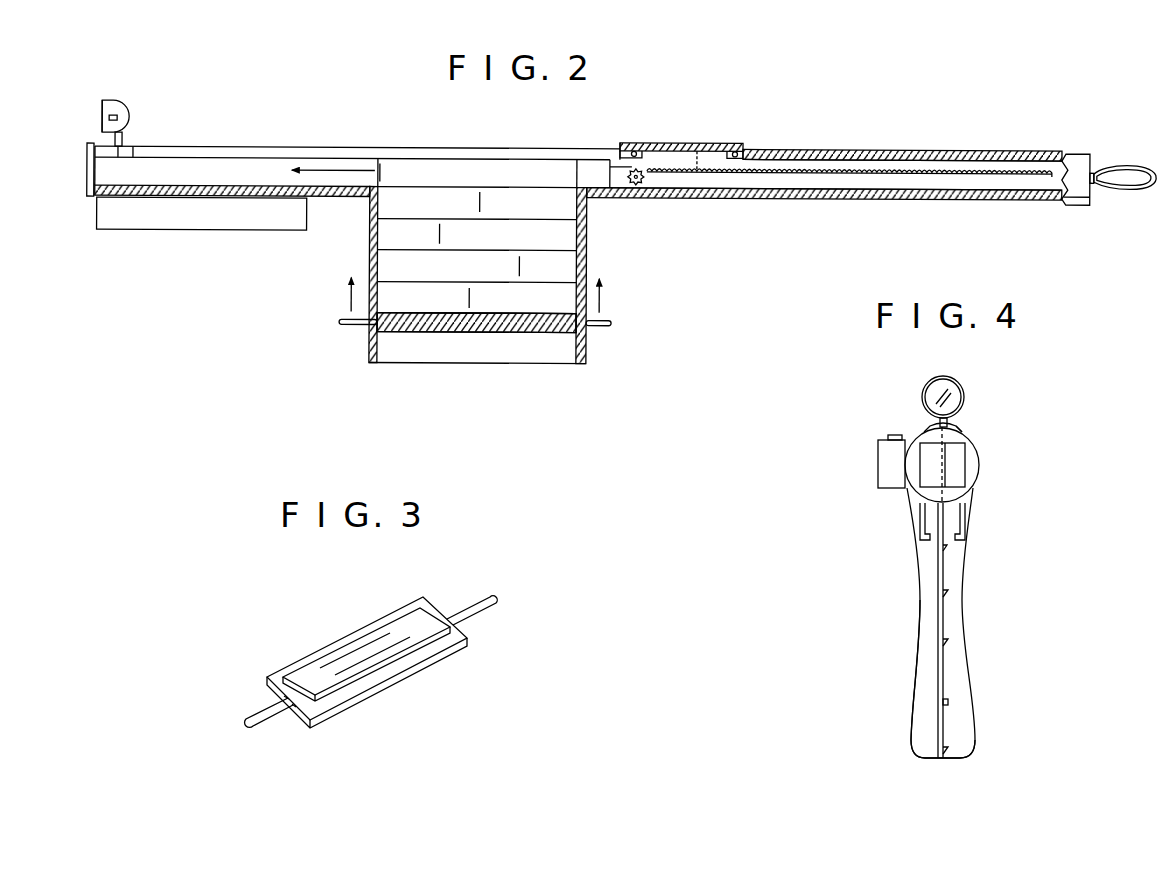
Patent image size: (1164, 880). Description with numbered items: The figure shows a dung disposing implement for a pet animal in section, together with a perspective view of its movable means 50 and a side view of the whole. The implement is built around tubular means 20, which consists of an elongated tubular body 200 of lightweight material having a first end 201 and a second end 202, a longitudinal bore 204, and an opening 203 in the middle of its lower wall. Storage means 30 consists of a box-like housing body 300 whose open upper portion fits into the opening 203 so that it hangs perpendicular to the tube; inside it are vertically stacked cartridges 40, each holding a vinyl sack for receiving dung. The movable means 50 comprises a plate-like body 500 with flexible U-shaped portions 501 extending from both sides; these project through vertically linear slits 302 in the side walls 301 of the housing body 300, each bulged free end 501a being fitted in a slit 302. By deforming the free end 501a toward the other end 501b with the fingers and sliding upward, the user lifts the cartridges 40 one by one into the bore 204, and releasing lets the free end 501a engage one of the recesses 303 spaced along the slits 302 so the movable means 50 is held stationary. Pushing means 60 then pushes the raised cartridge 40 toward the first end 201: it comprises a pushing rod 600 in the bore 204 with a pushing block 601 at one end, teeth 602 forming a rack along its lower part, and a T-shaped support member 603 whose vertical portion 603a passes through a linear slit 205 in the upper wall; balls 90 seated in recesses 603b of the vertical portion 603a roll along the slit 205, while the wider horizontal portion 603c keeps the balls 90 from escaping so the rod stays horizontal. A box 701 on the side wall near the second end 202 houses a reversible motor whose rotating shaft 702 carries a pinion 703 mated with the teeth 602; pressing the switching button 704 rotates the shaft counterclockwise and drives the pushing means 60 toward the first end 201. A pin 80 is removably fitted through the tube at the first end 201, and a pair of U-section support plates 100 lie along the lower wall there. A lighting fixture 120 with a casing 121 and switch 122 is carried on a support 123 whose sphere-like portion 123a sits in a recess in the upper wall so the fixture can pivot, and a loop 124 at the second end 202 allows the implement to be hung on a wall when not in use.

In FIG. 2, the tubular means 20 is at (1025, 208).
In FIG. 4, the tubular means 20 is at (977, 441).
In FIG. 2, the storage means 30 is at (545, 366).
In FIG. 4, the storage means 30 is at (911, 691).
In FIG. 2, the cartridges 40 is at (418, 162).
In FIG. 2, the movable means 50 is at (465, 338).
In FIG. 3, the movable means 50 is at (351, 629).
In FIG. 2, the pushing means 60 is at (887, 176).
In FIG. 2, the pin 80 is at (90, 143).
In FIG. 4, the pin 80 is at (948, 478).
In FIG. 2, the ball 90 is at (634, 147).
In FIG. 2, the support plates 100 is at (192, 215).
In FIG. 4, the support plates 100 is at (920, 526).
In FIG. 2, the lighting fixture 120 is at (127, 106).
In FIG. 4, the lighting fixture 120 is at (955, 379).
In FIG. 2, the casing 121 is at (107, 100).
In FIG. 2, the switch 122 is at (118, 118).
In FIG. 2, the support 123 is at (122, 138).
In FIG. 2, the sphere-like portion 123a is at (118, 153).
In FIG. 2, the loop 124 is at (1140, 166).
In FIG. 2, the tubular body 200 is at (788, 200).
In FIG. 4, the tubular body 200 is at (978, 452).
In FIG. 2, the first end 201 is at (100, 145).
In FIG. 2, the second end 202 is at (1083, 160).
In FIG. 2, the opening 203 is at (376, 197).
In FIG. 2, the longitudinal bore 204 is at (261, 168).
In FIG. 4, the longitudinal bore 204 is at (961, 465).
In FIG. 2, the linear slit 205 is at (482, 150).
In FIG. 2, the housing body 300 is at (590, 353).
In FIG. 4, the housing body 300 is at (974, 738).
In FIG. 4, the side walls 301 is at (958, 604).
In FIG. 4, the slits 302 is at (921, 600).
In FIG. 4, the recesses 303 is at (948, 549).
In FIG. 2, the plate-like body 500 is at (410, 333).
In FIG. 3, the plate-like body 500 is at (413, 614).
In FIG. 2, the U-shaped portions 501 is at (340, 321).
In FIG. 3, the U-shaped portions 501 is at (488, 598).
In FIG. 4, the U-shaped portions 501 is at (949, 702).
In FIG. 3, the free end 501a is at (294, 710).
In FIG. 3, the other end 501b is at (283, 699).
In FIG. 2, the pushing rod 600 is at (956, 163).
In FIG. 2, the pushing block 601 is at (600, 183).
In FIG. 2, the teeth 602 is at (961, 200).
In FIG. 2, the support member 603 is at (738, 143).
In FIG. 4, the support member 603 is at (925, 427).
In FIG. 2, the vertical portion 603a is at (637, 148).
In FIG. 2, the recesses 603b is at (622, 150).
In FIG. 2, the horizontal portion 603c is at (692, 142).
In FIG. 4, the horizontal portion 603c is at (965, 427).
In FIG. 4, the box 701 is at (888, 464).
In FIG. 2, the rotating shaft 702 is at (705, 172).
In FIG. 2, the pinion 703 is at (646, 178).
In FIG. 4, the switching button 704 is at (890, 436).